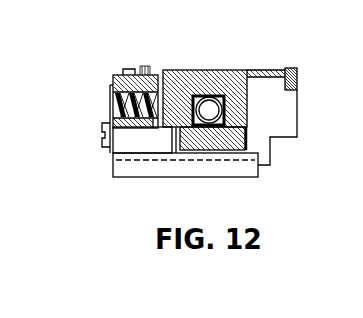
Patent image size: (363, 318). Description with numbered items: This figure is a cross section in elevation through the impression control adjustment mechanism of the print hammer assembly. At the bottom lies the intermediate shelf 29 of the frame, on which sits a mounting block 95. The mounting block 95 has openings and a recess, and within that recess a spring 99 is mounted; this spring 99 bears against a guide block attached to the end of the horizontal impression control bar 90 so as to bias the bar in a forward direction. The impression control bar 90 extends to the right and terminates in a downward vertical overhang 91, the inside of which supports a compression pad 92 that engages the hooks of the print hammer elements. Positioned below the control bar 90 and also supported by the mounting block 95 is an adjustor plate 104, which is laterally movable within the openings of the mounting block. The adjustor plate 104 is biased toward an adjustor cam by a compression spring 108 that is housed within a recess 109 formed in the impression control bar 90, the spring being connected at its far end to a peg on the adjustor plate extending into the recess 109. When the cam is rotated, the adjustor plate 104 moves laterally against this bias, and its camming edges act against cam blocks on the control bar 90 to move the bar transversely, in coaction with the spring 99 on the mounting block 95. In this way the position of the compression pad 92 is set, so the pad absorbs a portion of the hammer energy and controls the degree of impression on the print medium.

The intermediate shelf 29 is at (258, 171).
The mounting block 95 is at (144, 146).
The spring 99 is at (113, 92).
The impression control bar 90 is at (240, 85).
The recess 109 is at (193, 97).
The compression spring 108 is at (211, 97).
The adjustor plate 104 is at (245, 130).
The compression pad 92 is at (287, 80).
The overhang 91 is at (298, 84).